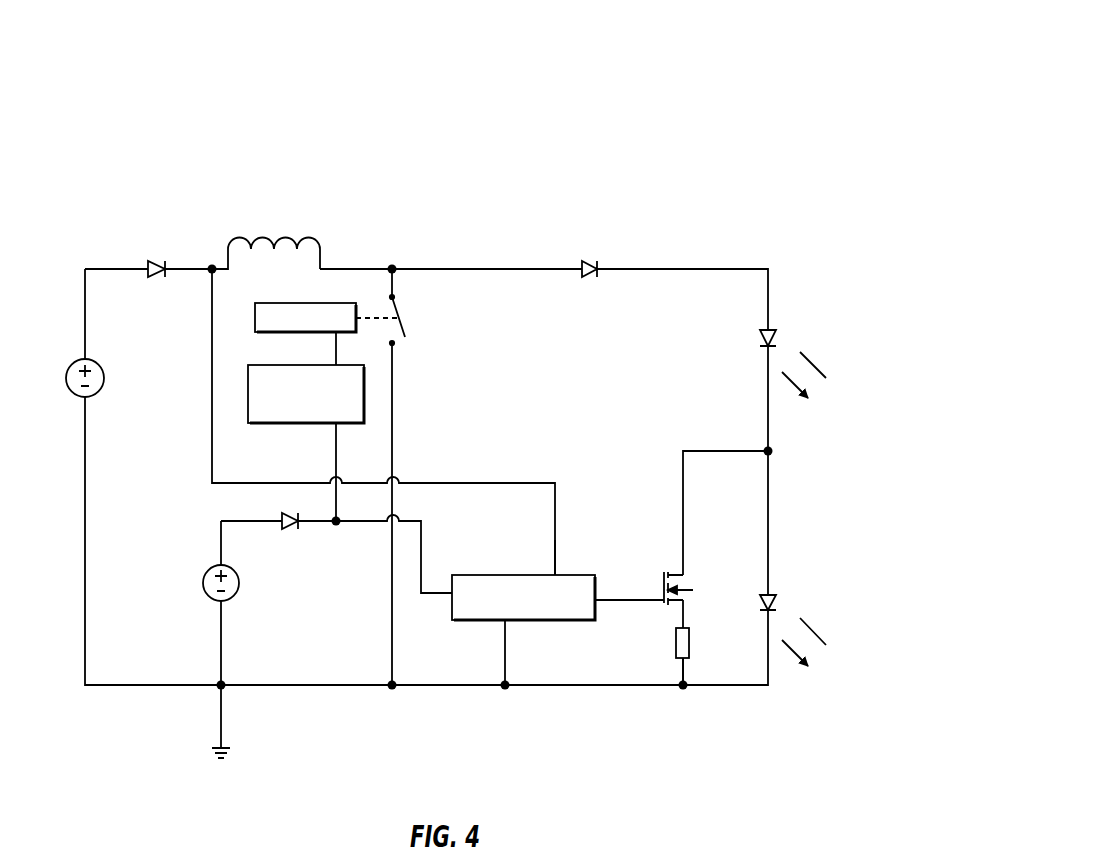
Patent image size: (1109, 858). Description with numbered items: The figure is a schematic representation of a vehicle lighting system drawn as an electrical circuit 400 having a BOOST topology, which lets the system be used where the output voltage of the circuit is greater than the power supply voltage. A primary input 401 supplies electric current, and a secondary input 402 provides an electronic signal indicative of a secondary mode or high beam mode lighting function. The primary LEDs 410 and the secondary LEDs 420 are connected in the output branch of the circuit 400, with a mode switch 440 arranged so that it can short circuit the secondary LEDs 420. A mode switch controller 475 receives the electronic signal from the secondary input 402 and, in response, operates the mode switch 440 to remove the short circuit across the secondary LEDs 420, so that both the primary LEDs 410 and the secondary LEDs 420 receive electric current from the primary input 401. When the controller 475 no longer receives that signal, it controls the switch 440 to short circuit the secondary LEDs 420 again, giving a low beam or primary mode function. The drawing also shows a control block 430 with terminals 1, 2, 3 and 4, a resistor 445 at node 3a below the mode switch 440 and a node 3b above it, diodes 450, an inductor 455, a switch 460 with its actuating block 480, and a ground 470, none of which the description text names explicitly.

The electrical circuit 400 is at (692, 94).
The primary input 401 is at (76, 415).
The secondary input 402 is at (204, 635).
The primary LEDs 410 is at (869, 358).
The secondary LEDs 420 is at (867, 616).
The controller 430 is at (451, 656).
The mode switch 440 is at (664, 576).
The resistor 445 is at (676, 641).
The diode 450 is at (157, 261).
The inductor 455 is at (269, 238).
The switch 460 is at (406, 332).
The ground 470 is at (239, 793).
The mode switch controller 475 is at (365, 405).
The switch actuator 480 is at (330, 303).
The controller pin 1 is at (436, 573).
The controller pin 2 is at (494, 652).
The controller pin 3 is at (629, 583).
The controller pin 4 is at (548, 556).
The node 3a is at (701, 655).
The node 3b is at (725, 495).